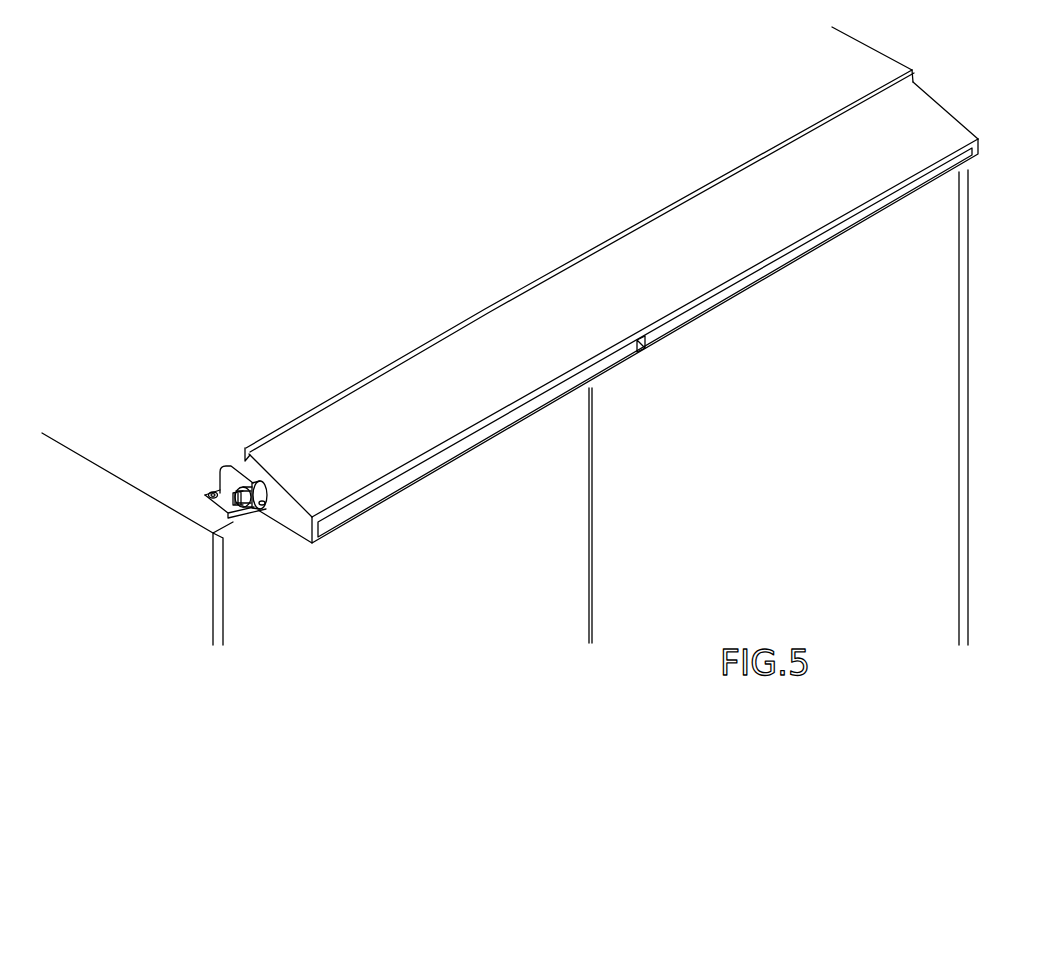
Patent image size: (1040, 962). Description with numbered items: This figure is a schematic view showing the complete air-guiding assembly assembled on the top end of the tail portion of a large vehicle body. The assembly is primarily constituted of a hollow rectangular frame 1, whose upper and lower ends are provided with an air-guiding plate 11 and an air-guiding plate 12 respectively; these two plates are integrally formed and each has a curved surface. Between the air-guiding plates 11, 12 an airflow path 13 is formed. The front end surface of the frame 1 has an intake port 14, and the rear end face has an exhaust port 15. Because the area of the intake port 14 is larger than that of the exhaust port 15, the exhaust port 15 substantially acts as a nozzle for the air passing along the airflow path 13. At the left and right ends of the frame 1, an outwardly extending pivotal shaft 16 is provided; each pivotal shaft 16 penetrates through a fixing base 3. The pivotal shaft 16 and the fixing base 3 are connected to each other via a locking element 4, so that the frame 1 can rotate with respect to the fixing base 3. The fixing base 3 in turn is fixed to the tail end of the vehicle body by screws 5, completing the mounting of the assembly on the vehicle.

The frame 1 is at (467, 306).
The air-guiding plate 11 is at (567, 285).
The air-guiding plate 12 is at (430, 477).
The airflow path 13 is at (599, 373).
The intake port 14 is at (321, 403).
The exhaust port 15 is at (483, 435).
The fixing base 3 is at (219, 479).
The locking element 4 is at (248, 515).
The screw 5 is at (209, 492).
The pivotal shaft 16 is at (226, 516).